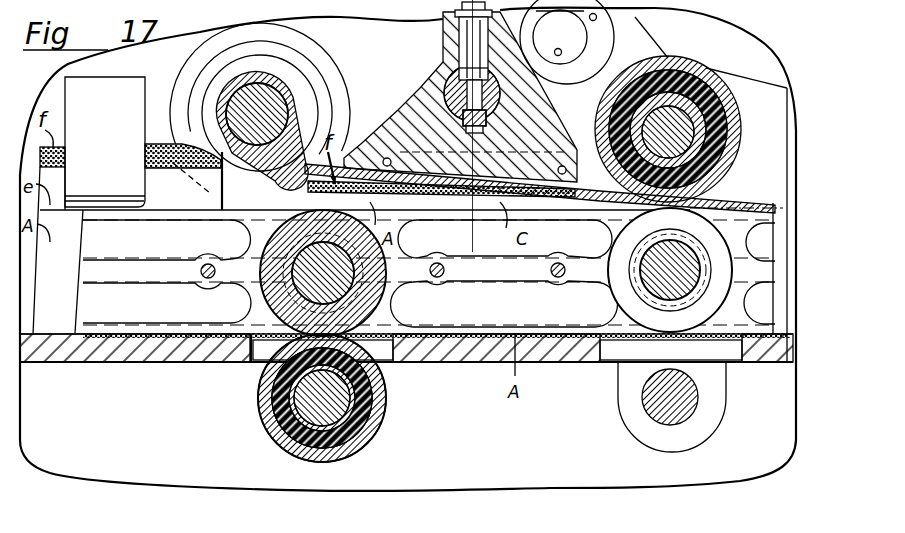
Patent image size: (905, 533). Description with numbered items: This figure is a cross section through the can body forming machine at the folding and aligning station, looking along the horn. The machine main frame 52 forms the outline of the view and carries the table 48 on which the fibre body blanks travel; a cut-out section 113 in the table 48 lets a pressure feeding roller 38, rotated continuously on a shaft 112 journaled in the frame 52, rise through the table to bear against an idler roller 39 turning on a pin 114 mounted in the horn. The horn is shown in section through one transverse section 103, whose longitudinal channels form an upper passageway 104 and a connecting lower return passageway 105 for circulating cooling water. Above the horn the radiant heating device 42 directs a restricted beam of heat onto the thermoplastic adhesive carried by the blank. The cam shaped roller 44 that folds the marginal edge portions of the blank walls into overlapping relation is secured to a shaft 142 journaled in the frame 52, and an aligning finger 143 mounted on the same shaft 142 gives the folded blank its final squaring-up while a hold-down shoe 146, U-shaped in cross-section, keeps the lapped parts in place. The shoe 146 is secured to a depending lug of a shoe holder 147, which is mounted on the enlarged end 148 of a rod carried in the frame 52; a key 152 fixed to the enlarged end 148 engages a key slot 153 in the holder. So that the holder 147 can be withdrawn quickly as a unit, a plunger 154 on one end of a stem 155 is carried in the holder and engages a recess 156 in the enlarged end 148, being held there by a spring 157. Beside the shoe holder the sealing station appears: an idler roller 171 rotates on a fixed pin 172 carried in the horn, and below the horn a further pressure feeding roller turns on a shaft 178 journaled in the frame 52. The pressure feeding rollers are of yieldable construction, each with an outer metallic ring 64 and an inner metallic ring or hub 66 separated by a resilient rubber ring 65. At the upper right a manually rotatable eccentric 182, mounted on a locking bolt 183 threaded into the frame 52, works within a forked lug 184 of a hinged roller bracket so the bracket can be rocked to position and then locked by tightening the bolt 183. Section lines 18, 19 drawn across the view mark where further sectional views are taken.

The machine main frame 52 is at (345, 40).
The radiant heating device 42 is at (105, 142).
The cam shaped roller 44 is at (323, 80).
The shaft 142 is at (273, 115).
The aligning finger 143 is at (266, 183).
The shoe holder 147 is at (420, 123).
The hold-down shoe 146 is at (362, 163).
The enlarged end of rod 148 is at (496, 90).
The spring 157 is at (458, 12).
The stem 155 is at (462, 18).
The plunger 154 is at (459, 38).
The recess 156 is at (484, 83).
The key 152 is at (488, 118).
The key slot 153 is at (488, 129).
The eccentric 182 is at (612, 30).
The locking bolt 183 is at (568, 33).
The forked lug 184 is at (614, 20).
The transverse section of horn 103 is at (167, 271).
The upper passageway 104 is at (101, 246).
The lower return passageway 105 is at (101, 302).
The idler roller 39 is at (357, 298).
The pin 114 is at (300, 262).
The idler roller 171 is at (710, 303).
The fixed pin 172 is at (655, 258).
The table 48 is at (117, 352).
The cut-out section 113 is at (256, 358).
The pressure feeding roller 38 is at (290, 432).
The shaft 112 is at (278, 418).
The outer metallic ring 64 is at (380, 412).
The resilient ring or core 65 is at (370, 432).
The inner metallic ring or hub 66 is at (350, 449).
The shaft 178 is at (683, 404).
The section line 18- 18 is at (243, 166).
The section line 19- 19 is at (460, 5).